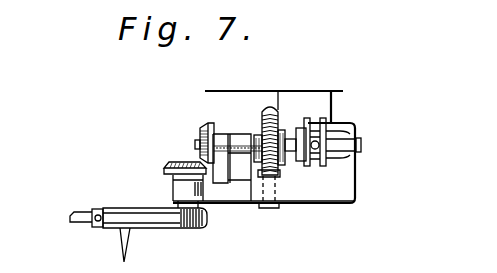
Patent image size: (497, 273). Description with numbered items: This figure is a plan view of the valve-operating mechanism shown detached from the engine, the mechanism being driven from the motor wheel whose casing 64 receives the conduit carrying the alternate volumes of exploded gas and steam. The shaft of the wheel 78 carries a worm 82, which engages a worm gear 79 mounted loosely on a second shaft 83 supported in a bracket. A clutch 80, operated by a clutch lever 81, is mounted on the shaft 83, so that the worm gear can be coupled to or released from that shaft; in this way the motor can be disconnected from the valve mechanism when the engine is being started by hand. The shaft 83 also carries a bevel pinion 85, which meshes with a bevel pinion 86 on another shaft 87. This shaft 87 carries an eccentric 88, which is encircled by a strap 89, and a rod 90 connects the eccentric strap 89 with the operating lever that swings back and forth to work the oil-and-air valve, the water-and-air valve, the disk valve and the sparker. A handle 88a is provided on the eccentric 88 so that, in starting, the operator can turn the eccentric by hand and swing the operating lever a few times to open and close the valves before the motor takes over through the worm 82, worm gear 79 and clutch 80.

The casing 64 is at (343, 91).
The shaft of the wheel 78 is at (268, 104).
The worm gear 79 is at (278, 172).
The clutch 80 is at (290, 128).
The clutch lever 81 is at (358, 157).
The worm 82 is at (262, 129).
The shaft 83 is at (195, 145).
The bevel pinion 85 is at (199, 123).
The bevel pinion 86 is at (163, 166).
The shaft 87 is at (189, 233).
The eccentric 88 is at (146, 229).
The handle 88a is at (138, 250).
The strap 89 is at (122, 221).
The rod 90 is at (78, 216).